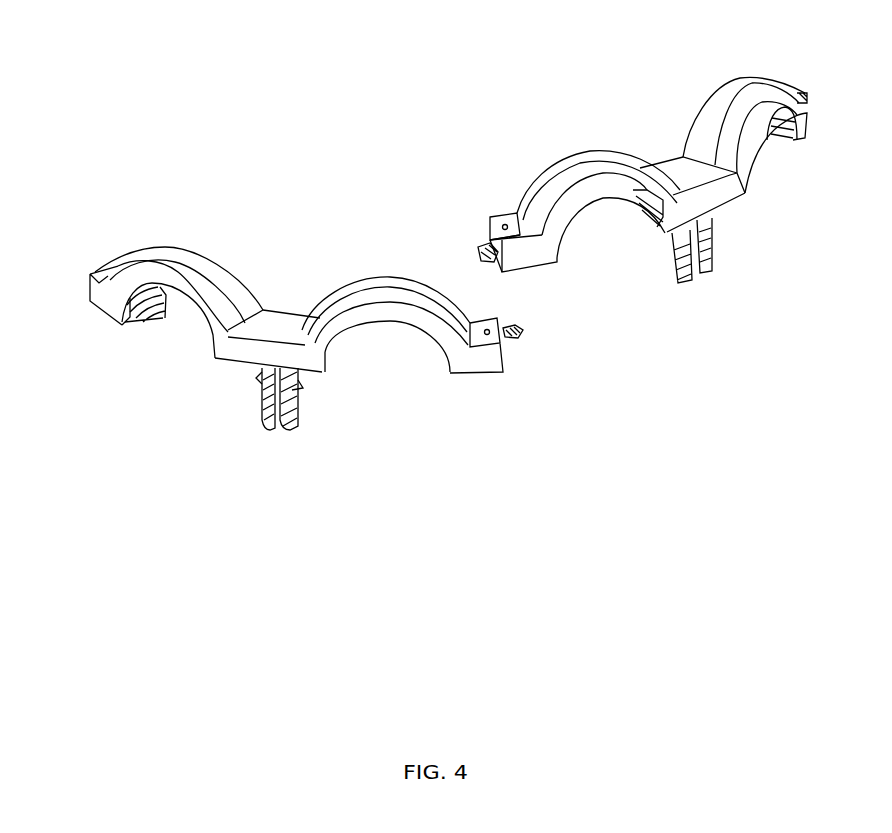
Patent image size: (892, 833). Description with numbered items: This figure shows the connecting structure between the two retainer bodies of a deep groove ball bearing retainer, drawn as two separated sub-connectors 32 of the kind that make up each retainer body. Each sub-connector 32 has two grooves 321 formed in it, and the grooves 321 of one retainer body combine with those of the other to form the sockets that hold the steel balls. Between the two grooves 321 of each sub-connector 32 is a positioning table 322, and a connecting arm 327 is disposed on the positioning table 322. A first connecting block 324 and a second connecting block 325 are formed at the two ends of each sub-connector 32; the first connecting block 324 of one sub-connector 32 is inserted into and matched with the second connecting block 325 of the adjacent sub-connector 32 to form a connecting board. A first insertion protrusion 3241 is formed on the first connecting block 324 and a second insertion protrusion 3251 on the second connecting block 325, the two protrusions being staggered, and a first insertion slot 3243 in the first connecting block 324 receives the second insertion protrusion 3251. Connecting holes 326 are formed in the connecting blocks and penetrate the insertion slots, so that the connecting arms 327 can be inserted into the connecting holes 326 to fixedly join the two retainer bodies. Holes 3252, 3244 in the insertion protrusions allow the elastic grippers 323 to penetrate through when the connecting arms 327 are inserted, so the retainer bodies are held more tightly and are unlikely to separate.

The sub-connector 32 is at (208, 273).
The groove 321 is at (165, 252).
The positioning table 322 is at (275, 372).
The elastic gripper 323 is at (257, 382).
The first connecting block 324 is at (92, 272).
The first insertion protrusion 3241 is at (478, 249).
The first insertion slot 3243 is at (491, 241).
The hole 3244 is at (489, 251).
The second connecting block 325 is at (488, 358).
The second insertion protrusion 3251 is at (515, 333).
The hole 3252 is at (521, 338).
The connecting hole 326 is at (484, 330).
The connecting arm 327 is at (275, 427).